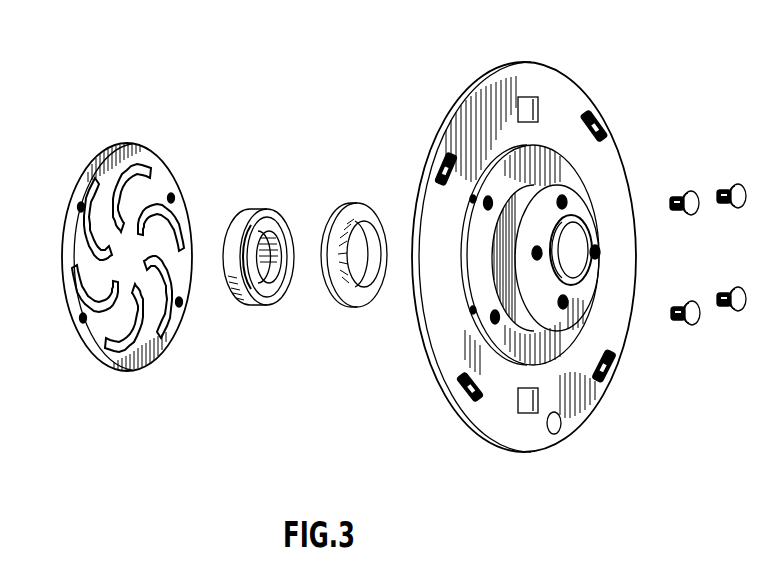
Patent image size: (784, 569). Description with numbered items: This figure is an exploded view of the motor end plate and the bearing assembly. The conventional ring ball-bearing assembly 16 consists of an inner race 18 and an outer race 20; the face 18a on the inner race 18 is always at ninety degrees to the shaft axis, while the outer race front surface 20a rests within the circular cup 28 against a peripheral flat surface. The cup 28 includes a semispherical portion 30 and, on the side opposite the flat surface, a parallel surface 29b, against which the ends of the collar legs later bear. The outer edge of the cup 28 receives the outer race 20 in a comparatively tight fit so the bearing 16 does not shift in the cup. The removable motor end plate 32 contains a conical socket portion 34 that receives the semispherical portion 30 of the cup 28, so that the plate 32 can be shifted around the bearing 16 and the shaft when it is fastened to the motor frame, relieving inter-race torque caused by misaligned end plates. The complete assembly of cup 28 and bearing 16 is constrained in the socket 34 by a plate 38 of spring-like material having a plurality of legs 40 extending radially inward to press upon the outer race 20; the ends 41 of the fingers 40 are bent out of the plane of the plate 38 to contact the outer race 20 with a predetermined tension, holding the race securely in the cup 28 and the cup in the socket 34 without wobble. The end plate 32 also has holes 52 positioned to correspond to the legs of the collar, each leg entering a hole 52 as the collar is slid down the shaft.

The ring ball-bearing assembly 16 is at (267, 250).
The inner race 18 is at (291, 268).
The face on inner race 18a is at (285, 290).
The outer race 20 is at (251, 271).
The outer race front surface 20a is at (277, 293).
The circular cup 28 is at (364, 248).
The surface 29b is at (367, 303).
The semispherical portion 30 is at (373, 212).
The removable motor end plate 32 is at (546, 242).
The conical socket portion 34 is at (594, 259).
The plate 38 is at (105, 243).
The legs 40 is at (82, 267).
The ends of fingers 41 is at (140, 261).
The holes 52 is at (564, 203).